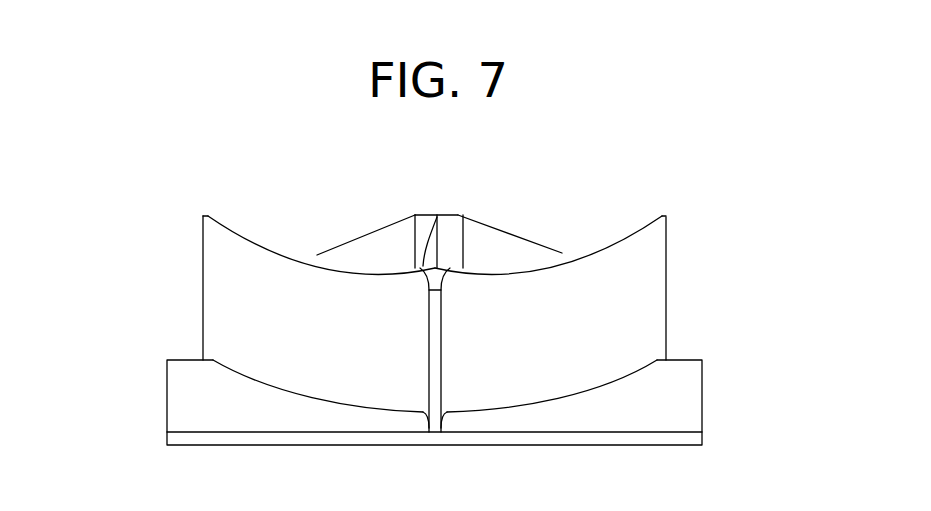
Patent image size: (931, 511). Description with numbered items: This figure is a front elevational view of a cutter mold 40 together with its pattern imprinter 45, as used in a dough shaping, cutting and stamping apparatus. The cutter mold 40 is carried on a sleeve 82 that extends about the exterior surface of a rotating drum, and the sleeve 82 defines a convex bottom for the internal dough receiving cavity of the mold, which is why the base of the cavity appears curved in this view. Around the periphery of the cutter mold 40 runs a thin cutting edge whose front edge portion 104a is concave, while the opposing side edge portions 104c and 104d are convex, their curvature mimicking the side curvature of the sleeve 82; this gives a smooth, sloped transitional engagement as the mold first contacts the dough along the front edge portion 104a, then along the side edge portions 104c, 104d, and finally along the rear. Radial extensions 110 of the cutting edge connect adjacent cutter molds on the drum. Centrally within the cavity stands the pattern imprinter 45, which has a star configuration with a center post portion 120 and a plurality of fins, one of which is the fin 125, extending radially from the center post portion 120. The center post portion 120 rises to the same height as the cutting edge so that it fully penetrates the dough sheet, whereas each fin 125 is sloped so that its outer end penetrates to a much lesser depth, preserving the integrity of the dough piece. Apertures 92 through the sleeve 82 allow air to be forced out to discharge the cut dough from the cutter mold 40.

The cutter mold 40 is at (582, 202).
The sleeve 82 is at (681, 417).
The radial extension 110 is at (440, 363).
The side edge portion 104c is at (207, 214).
The side edge portion 104d is at (665, 217).
The front edge portion 104a is at (495, 266).
The aperture 92 is at (265, 234).
The fin 125 is at (380, 245).
The pattern imprinter 45 is at (415, 208).
The center post portion 120 is at (420, 267).